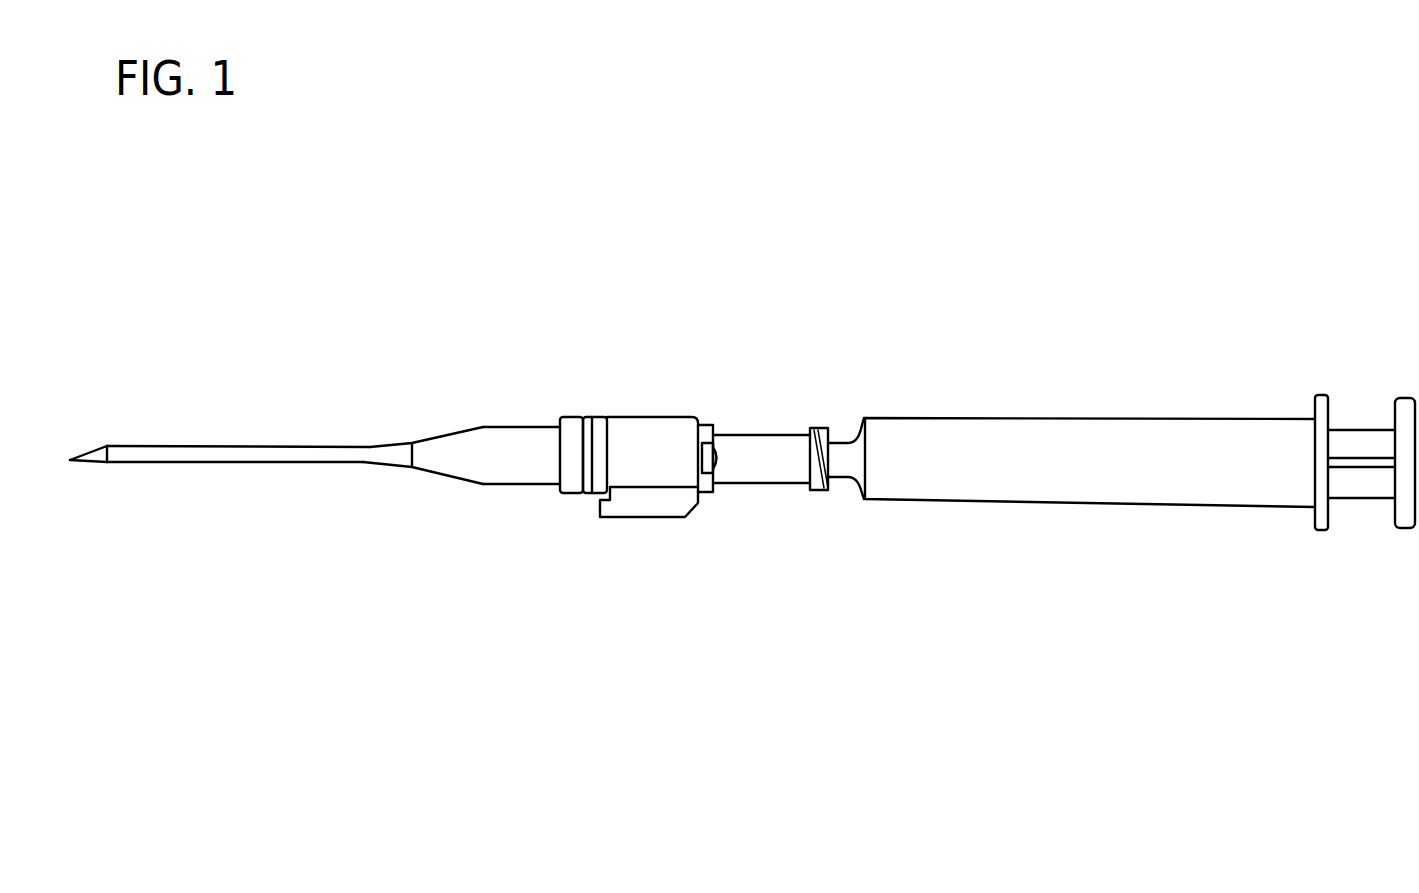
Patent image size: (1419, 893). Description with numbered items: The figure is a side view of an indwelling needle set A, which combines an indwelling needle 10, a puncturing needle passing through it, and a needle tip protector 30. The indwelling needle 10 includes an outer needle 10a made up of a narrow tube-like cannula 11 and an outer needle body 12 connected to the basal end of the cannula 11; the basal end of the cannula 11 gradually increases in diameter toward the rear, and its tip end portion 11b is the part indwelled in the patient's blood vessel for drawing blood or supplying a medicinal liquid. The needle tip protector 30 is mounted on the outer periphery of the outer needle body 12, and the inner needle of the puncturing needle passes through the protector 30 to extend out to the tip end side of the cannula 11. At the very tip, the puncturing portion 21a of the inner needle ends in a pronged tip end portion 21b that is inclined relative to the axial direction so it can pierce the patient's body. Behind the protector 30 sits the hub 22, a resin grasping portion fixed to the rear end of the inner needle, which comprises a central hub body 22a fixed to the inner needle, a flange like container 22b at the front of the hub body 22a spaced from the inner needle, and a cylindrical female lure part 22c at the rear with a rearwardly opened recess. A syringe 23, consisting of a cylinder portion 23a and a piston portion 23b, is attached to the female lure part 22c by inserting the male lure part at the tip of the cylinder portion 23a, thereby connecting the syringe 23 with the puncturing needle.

The indwelling needle set A is at (1273, 297).
The indwelling needle 10 is at (529, 347).
The outer needle 10a is at (452, 389).
The cannula 11 is at (380, 446).
The outer needle body 12 is at (431, 445).
The tip end portion 11b is at (108, 440).
The puncturing portion 21a is at (92, 467).
The tip end portion 21b is at (74, 455).
The needle tip protector 30 is at (660, 428).
The hub 22 is at (843, 378).
The hub body 22a is at (762, 437).
The flange like container 22b is at (708, 427).
The female lure part 22c is at (815, 428).
The syringe 23 is at (1381, 349).
The cylinder portion 23a is at (1295, 430).
The piston portion 23b is at (1360, 437).